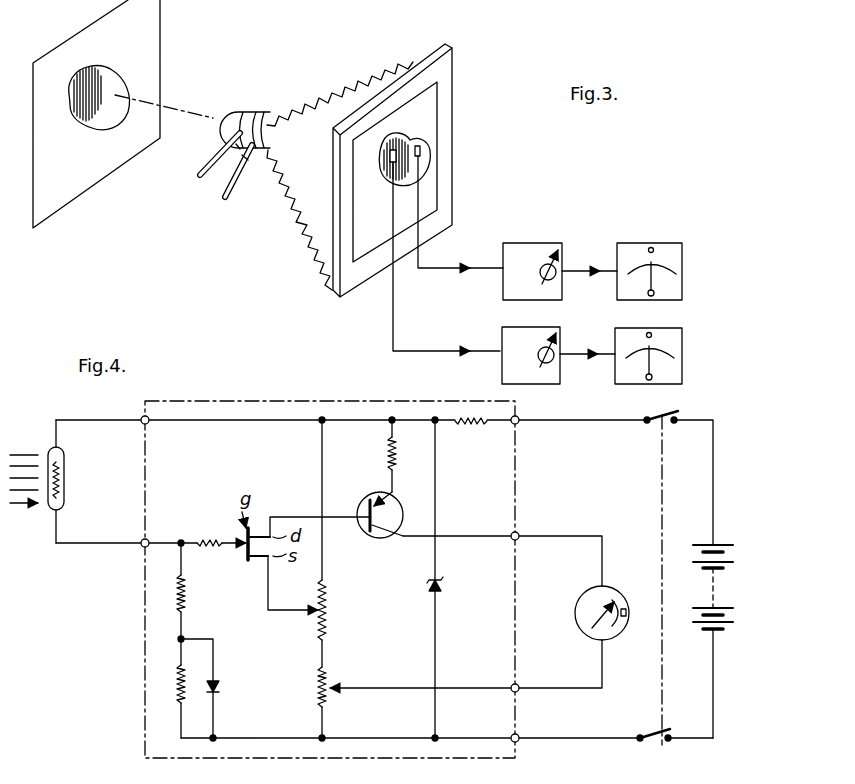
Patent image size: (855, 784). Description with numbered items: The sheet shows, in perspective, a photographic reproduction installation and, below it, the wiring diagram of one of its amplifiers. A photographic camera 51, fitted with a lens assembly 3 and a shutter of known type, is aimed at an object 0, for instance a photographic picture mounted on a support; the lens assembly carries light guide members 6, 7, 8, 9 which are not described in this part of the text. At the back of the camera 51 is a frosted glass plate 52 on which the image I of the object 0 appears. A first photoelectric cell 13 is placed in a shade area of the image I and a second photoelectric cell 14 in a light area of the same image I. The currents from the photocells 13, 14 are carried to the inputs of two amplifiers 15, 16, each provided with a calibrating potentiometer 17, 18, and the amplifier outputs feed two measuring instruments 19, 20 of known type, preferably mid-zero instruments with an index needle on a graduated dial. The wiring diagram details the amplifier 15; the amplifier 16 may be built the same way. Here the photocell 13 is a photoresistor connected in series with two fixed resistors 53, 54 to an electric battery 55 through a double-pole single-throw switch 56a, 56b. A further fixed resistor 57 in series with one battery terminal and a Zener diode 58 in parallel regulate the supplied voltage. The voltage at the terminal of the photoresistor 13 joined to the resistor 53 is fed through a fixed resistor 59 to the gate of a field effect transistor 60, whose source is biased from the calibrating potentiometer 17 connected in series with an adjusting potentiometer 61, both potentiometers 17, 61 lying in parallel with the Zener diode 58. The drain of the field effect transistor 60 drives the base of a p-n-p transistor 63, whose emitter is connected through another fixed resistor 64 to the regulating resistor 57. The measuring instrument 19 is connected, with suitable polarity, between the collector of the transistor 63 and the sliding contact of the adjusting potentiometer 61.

In FIG. 3, the object 0 is at (125, 66).
In FIG. 3, the lens assembly 3 is at (258, 112).
In FIG. 3, the light guide 6 is at (238, 196).
In FIG. 3, the light guide 7 is at (222, 152).
In FIG. 3, the light guide end 8 is at (238, 147).
In FIG. 3, the light guide end 9 is at (245, 158).
In FIG. 3, the photographic camera 51 is at (326, 92).
In FIG. 3, the frosted glass plate 52 is at (432, 100).
In FIG. 3, the image I is at (430, 138).
In FIG. 3, the first photoelectric cell 13 is at (391, 163).
In FIG. 4, the first photoelectric cell 13 is at (65, 478).
In FIG. 3, the second photoelectric cell 14 is at (420, 152).
In FIG. 3, the amplifier 15 is at (502, 363).
In FIG. 4, the amplifier 15 is at (236, 401).
In FIG. 3, the amplifier 16 is at (512, 245).
In FIG. 3, the calibrating potentiometer 17 is at (548, 360).
In FIG. 4, the calibrating potentiometer 17 is at (327, 610).
In FIG. 3, the calibrating potentiometer 18 is at (545, 262).
In FIG. 3, the measuring instrument 19 is at (683, 340).
In FIG. 4, the measuring instrument 19 is at (612, 640).
In FIG. 3, the measuring instrument 20 is at (683, 258).
In FIG. 4, the fixed resistor 53 is at (177, 585).
In FIG. 4, the fixed resistor 54 is at (175, 685).
In FIG. 4, the electric battery 55 is at (700, 548).
In FIG. 4, the switch pole 56a is at (648, 425).
In FIG. 4, the switch pole 56b is at (644, 733).
In FIG. 4, the fixed resistor 57 is at (466, 425).
In FIG. 4, the Zener diode 58 is at (440, 589).
In FIG. 4, the fixed resistor 59 is at (208, 535).
In FIG. 4, the field effect transistor 60 is at (258, 562).
In FIG. 4, the adjusting potentiometer 61 is at (318, 688).
In FIG. 4, the p-n-p transistor 63 is at (372, 533).
In FIG. 4, the fixed resistor 64 is at (388, 452).